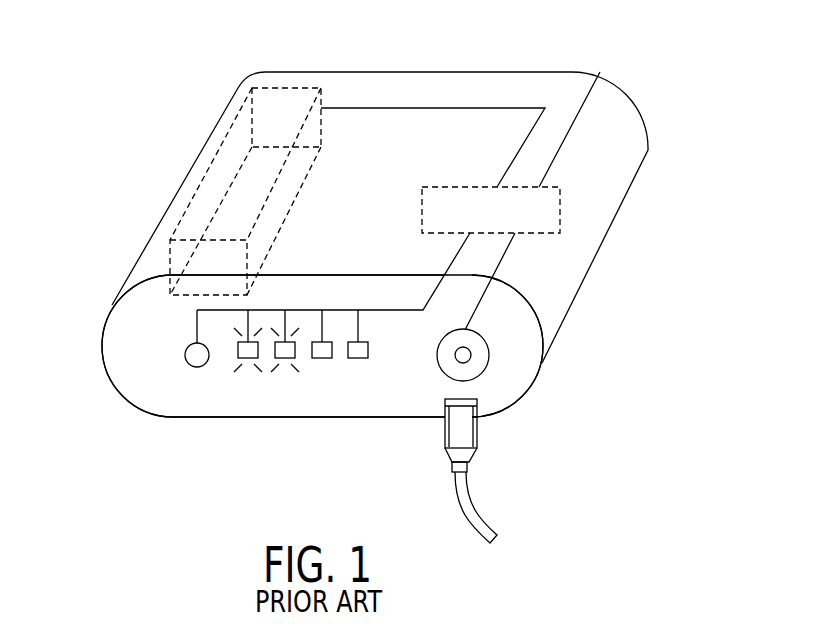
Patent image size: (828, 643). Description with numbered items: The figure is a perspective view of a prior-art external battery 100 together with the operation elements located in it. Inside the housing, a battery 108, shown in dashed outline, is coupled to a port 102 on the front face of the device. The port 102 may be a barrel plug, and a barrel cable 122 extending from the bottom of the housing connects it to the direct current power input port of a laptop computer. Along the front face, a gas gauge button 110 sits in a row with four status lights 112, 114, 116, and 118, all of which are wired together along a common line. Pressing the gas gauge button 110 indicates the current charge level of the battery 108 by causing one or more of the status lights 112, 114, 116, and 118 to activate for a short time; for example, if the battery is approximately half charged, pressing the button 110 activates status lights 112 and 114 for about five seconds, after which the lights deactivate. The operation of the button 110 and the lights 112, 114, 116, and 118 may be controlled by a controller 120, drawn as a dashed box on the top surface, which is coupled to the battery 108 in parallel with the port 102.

The external battery 100 is at (190, 170).
The port 102 is at (493, 356).
The battery 108 is at (293, 88).
The gas gauge button 110 is at (199, 367).
The status light 112 is at (249, 366).
The status light 114 is at (287, 366).
The status light 116 is at (323, 366).
The status light 118 is at (360, 366).
The controller 120 is at (562, 215).
The barrel cable 122 is at (482, 508).